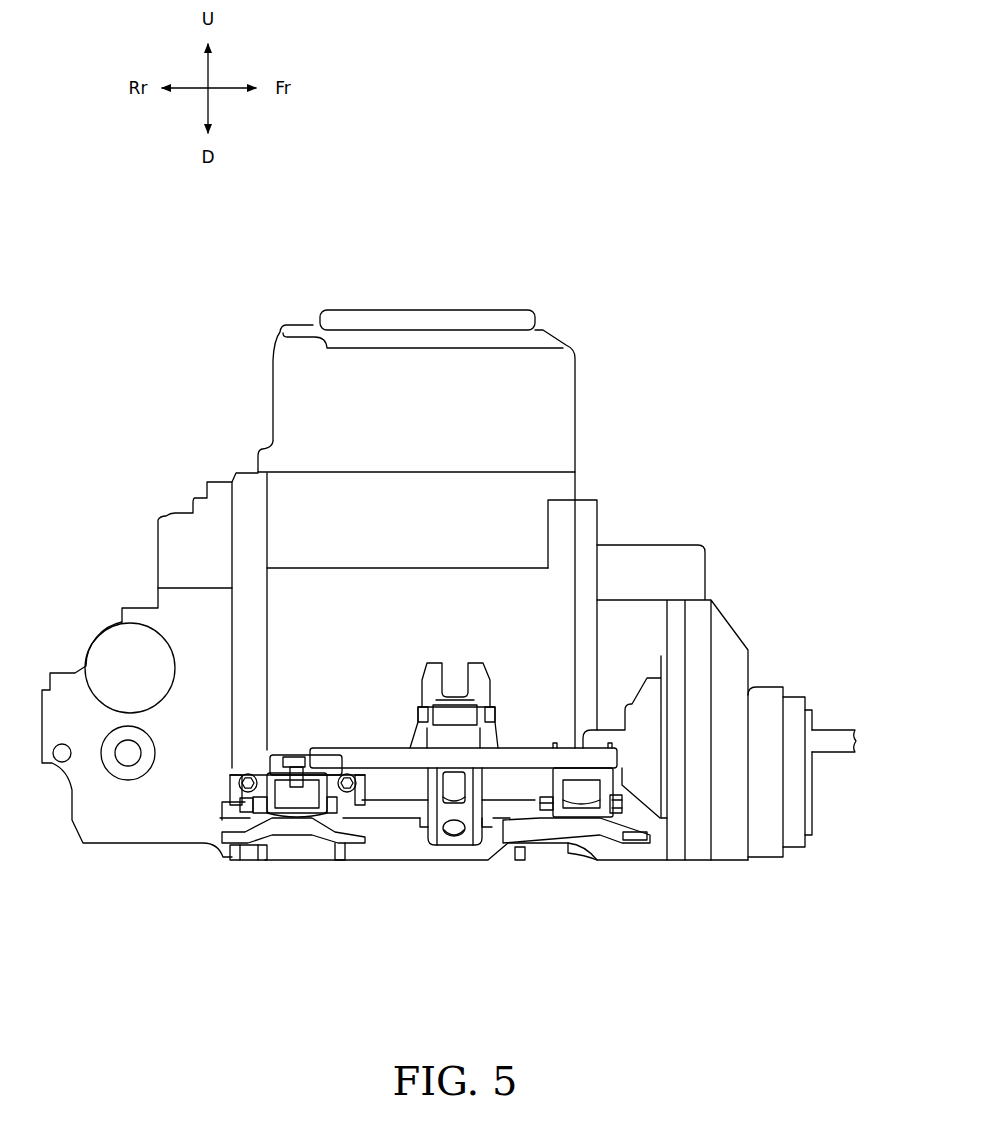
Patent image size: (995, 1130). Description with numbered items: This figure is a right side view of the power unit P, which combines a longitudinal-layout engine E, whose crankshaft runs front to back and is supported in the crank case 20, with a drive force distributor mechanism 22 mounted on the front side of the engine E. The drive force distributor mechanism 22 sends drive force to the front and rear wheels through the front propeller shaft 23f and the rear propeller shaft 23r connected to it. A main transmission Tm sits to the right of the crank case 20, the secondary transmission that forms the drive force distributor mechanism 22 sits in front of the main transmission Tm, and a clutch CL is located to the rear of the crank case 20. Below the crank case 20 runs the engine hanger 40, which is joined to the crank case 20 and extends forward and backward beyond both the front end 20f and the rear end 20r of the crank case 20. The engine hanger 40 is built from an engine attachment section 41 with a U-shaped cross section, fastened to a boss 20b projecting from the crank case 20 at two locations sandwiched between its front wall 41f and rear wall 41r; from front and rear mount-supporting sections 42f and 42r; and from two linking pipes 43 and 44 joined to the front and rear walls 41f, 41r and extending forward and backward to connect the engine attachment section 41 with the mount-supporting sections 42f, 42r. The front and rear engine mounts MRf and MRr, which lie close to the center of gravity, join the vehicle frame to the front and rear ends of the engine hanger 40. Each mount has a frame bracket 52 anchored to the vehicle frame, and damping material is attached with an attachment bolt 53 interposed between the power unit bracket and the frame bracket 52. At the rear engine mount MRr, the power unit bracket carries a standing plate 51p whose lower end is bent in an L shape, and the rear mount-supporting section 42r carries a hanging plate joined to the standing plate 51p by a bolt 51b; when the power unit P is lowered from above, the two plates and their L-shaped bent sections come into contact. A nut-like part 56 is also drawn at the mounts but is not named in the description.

The crank case 20 is at (355, 583).
The rear end of crank case 20r is at (268, 597).
The front end of crank case 20f is at (575, 580).
The boss 20b is at (455, 680).
The drive force distributor mechanism 22 is at (760, 702).
The rear propeller shaft 23r is at (595, 728).
The front propeller shaft 23f is at (835, 733).
The engine hanger 40 is at (445, 850).
The engine attachment section 41 is at (460, 843).
The rear wall 41r is at (427, 705).
The front wall 41f is at (487, 703).
The rear mount-supporting section 42r is at (295, 742).
The front mount-supporting section 42f is at (567, 747).
The linking pipe 43 is at (395, 752).
The linking pipe 44 is at (395, 817).
The bolt 51b is at (245, 777).
The standing plate 51p is at (332, 778).
The frame bracket 52 is at (255, 845).
The attachment bolt 53 is at (238, 800).
The fastening nut 56 is at (235, 858).
The main transmission Tm is at (528, 625).
The rear engine mount MRr is at (290, 858).
The front engine mount MRf is at (576, 877).
The clutch CL is at (120, 823).
The engine E is at (418, 287).
The power unit P is at (656, 270).